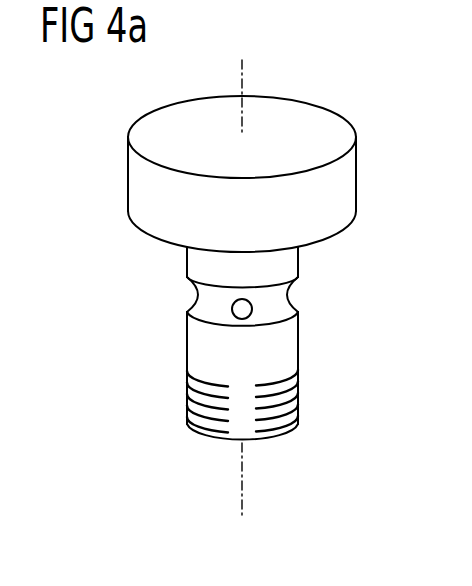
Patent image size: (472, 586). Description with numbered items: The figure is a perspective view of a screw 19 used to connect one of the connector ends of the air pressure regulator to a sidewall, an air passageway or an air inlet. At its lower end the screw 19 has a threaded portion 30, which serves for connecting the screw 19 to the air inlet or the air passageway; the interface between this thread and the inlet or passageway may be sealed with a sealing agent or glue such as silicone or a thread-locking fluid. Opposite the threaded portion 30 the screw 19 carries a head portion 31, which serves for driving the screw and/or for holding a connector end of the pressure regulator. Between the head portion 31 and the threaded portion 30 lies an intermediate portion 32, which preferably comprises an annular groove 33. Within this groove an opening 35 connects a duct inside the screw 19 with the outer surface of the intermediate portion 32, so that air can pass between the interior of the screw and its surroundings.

The screw 19 is at (107, 259).
The threaded portion 30 is at (299, 398).
The head portion 31 is at (343, 180).
The intermediate portion 32 is at (195, 333).
The annular groove 33 is at (287, 289).
The opening 35 is at (242, 313).